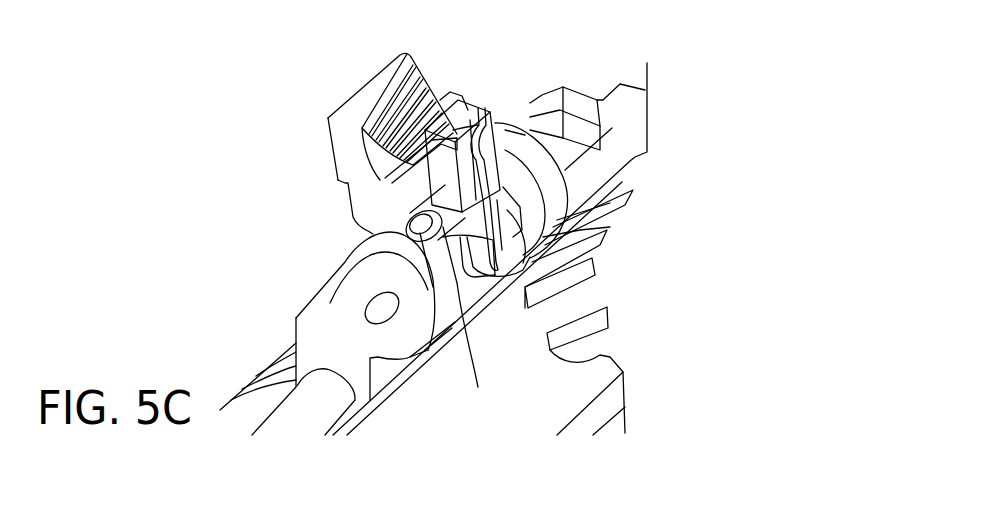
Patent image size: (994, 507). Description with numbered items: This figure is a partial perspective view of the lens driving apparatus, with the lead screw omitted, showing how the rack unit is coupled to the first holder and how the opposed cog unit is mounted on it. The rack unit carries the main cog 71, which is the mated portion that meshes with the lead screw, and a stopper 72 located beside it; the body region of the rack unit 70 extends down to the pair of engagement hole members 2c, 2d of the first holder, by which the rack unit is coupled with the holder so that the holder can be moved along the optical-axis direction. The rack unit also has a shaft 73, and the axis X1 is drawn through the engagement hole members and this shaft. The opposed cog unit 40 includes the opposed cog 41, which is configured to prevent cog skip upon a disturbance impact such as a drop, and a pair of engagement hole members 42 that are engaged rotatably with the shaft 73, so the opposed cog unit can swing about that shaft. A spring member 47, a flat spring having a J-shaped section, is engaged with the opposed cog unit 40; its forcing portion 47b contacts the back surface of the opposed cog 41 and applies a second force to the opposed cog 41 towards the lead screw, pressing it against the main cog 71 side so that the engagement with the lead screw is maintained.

The engagement hole member 2c is at (355, 308).
The engagement hole member 2d is at (543, 162).
The opposed cog unit 40 is at (468, 112).
The opposed cog 41 is at (460, 98).
The engagement hole member 42 is at (600, 229).
The spring member 47 is at (590, 278).
The forcing portion 47b is at (503, 133).
The body 70 is at (352, 166).
The main cog 71 is at (380, 90).
The stopper 72 is at (449, 97).
The shaft 73 is at (454, 321).
The axis X1 is at (528, 146).